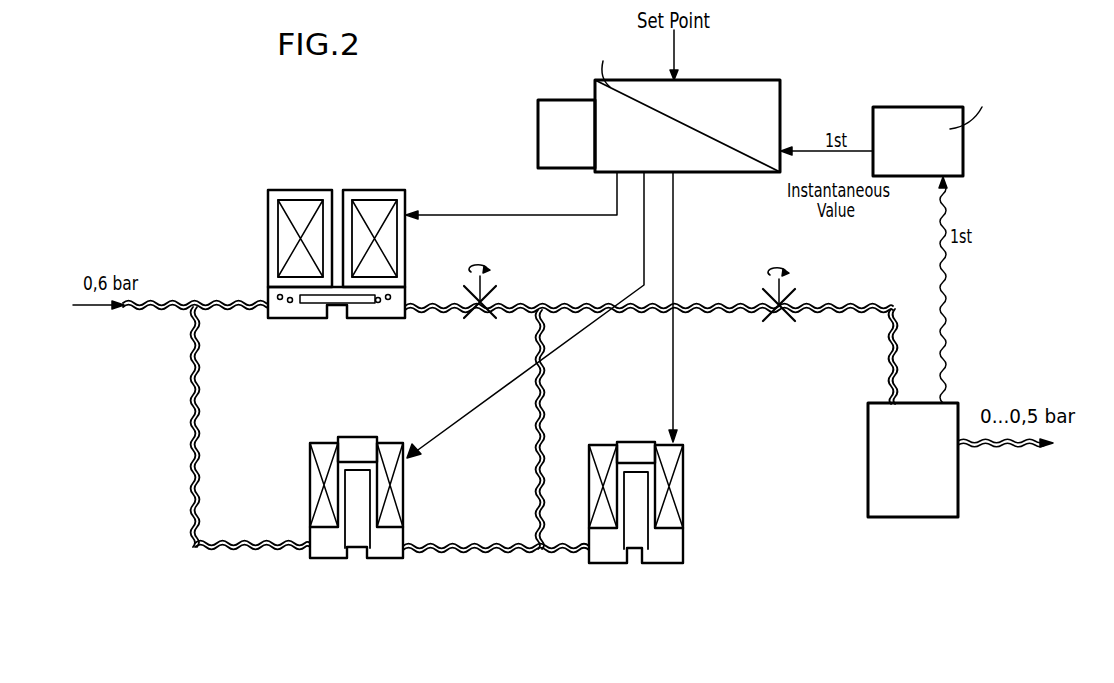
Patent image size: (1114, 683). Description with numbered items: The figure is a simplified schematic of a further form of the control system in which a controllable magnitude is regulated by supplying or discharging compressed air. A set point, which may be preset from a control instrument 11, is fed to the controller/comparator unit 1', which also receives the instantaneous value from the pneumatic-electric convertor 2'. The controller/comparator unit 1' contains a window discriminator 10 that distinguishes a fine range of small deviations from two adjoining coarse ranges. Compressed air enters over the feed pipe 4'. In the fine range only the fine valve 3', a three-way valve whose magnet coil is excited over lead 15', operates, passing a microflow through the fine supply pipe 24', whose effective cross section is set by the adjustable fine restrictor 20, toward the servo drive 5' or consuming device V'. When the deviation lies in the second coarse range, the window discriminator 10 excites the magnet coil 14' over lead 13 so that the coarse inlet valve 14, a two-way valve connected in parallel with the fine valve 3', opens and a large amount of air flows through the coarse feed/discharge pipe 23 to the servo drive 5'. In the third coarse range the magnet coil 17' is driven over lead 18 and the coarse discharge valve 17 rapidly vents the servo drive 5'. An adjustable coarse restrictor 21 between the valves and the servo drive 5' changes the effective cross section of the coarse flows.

The controller/comparator unit 1' is at (607, 61).
The window discriminator 10 is at (781, 90).
The control instrument 11 is at (538, 126).
The pneumatic-electric convertor 2' is at (945, 107).
The fine valve 3' is at (304, 284).
The feed pipe 4' is at (195, 341).
The fine supply pipe 24' is at (649, 343).
The lead 15' is at (511, 223).
The lead 13 is at (470, 413).
The lead 18 is at (676, 222).
The fine restrictor 20 is at (492, 268).
The coarse restrictor 21 is at (792, 272).
The coarse feed/discharge pipe 23 is at (538, 486).
The magnet coil of coarse inlet valve 14' is at (321, 481).
The coarse inlet valve 14 is at (326, 523).
The magnet coil of coarse discharge valve 17' is at (684, 481).
The coarse discharge valve 17 is at (679, 517).
The servo drive 5' is at (946, 460).